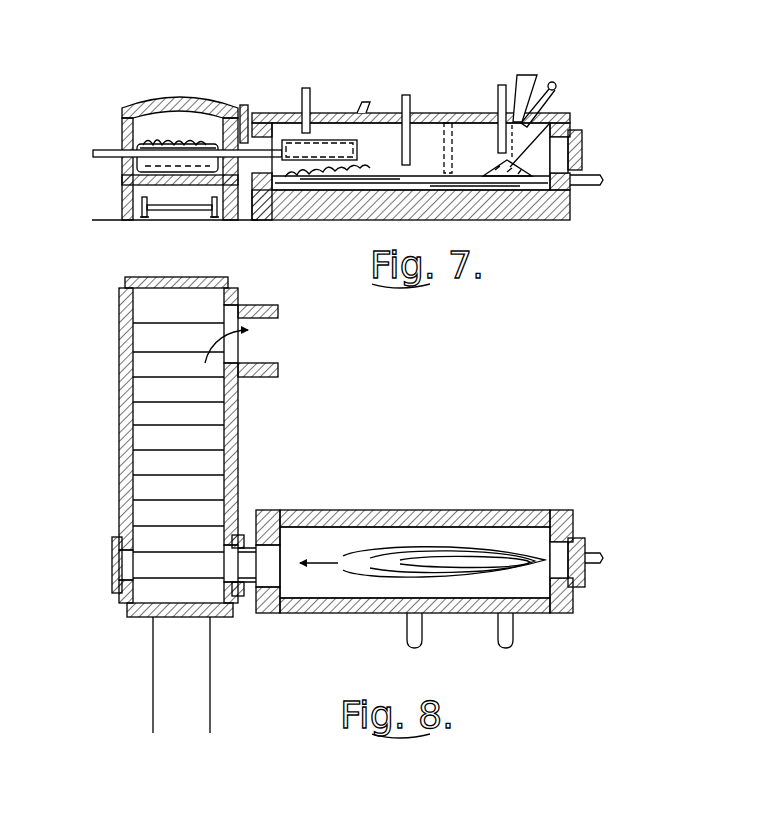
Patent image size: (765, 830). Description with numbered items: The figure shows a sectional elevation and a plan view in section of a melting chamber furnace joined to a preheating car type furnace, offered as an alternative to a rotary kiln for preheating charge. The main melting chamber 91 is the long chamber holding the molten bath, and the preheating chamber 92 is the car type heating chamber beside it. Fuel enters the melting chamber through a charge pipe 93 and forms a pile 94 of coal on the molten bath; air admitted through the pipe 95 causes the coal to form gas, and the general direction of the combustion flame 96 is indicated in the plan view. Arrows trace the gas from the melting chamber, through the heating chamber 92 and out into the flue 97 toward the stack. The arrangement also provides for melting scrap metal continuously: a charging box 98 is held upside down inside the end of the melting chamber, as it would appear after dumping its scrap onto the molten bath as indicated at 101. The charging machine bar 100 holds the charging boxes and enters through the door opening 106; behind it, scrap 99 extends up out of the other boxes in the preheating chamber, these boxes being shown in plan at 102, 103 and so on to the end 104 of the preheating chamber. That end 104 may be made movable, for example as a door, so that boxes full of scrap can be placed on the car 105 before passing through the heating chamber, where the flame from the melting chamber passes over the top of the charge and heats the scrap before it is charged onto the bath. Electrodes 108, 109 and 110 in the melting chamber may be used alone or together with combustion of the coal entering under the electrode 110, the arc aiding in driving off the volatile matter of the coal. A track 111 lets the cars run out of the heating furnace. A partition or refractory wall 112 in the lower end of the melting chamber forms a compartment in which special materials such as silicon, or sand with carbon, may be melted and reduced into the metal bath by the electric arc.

In FIG. 7, the main melting chamber 91 is at (411, 163).
In FIG. 8, the main melting chamber 91 is at (422, 554).
In FIG. 7, the preheating chamber 92 is at (163, 122).
In FIG. 8, the preheating chamber 92 is at (143, 458).
In FIG. 7, the charge pipe 93 is at (530, 70).
In FIG. 7, the pile 94 is at (566, 115).
In FIG. 7, the pipe 95 is at (556, 79).
In FIG. 8, the combustion flame 96 is at (395, 545).
In FIG. 8, the flue 97 is at (268, 345).
In FIG. 7, the charging box 98 is at (323, 138).
In FIG. 7, the scrap 99 is at (190, 137).
In FIG. 7, the charging machine bar 100 is at (124, 147).
In FIG. 7, the scrap on molten bath 101 is at (318, 178).
In FIG. 8, the charging box 102 is at (233, 567).
In FIG. 8, the charging box 103 is at (178, 516).
In FIG. 8, the end of preheating chamber 104 is at (210, 262).
In FIG. 7, the car 105 is at (178, 184).
In FIG. 8, the door opening 106 is at (124, 573).
In FIG. 7, the electrode 108 is at (300, 88).
In FIG. 7, the electrode 109 is at (412, 95).
In FIG. 7, the electrode 110 is at (491, 88).
In FIG. 8, the track 111 is at (200, 735).
In FIG. 7, the partition or refractory wall 112 is at (455, 130).